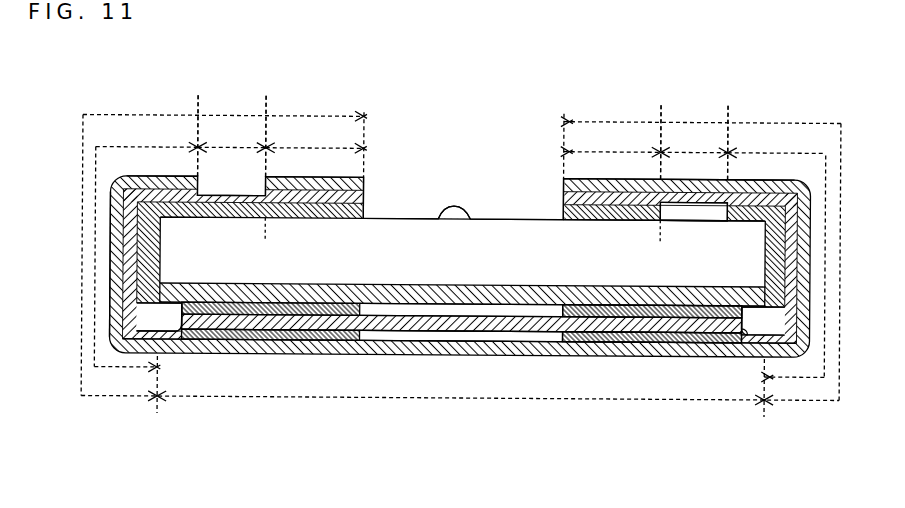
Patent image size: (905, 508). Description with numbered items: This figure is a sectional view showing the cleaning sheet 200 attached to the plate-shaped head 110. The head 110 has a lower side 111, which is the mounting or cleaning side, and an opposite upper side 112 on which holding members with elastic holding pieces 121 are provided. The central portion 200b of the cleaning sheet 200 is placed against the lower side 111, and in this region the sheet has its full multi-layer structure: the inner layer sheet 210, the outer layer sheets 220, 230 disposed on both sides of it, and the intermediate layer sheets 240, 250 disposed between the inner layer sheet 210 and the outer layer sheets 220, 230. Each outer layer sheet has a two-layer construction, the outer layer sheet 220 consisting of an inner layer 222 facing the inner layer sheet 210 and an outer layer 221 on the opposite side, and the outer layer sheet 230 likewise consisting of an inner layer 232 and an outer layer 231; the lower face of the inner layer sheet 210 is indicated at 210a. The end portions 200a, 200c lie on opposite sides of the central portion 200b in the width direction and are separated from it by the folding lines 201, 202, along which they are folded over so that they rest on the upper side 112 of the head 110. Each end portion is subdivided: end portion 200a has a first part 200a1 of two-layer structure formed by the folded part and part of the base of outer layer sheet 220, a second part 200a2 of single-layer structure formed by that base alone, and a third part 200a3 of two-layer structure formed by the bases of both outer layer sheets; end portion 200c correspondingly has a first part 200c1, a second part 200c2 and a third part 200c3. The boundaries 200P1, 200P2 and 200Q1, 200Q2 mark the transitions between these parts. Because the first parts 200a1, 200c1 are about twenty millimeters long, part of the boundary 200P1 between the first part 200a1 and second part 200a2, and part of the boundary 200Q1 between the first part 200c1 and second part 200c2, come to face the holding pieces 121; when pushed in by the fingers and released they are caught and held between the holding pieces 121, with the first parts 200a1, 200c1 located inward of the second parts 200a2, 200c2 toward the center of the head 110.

The cleaning sheet 200 is at (326, 96).
The end portion 200a is at (766, 114).
The first part 200a1 is at (593, 144).
The second part 200a2 is at (673, 144).
The third part 200a3 is at (763, 144).
The central portion 200b is at (446, 421).
The end portion 200c is at (124, 110).
The first part 200c1 is at (280, 143).
The second part 200c2 is at (212, 143).
The third part 200c3 is at (130, 143).
The boundary 200P1 is at (661, 134).
The right boundary position 2 200P2 is at (728, 135).
The boundary 200Q1 is at (266, 128).
The left boundary position 2 200Q2 is at (198, 127).
The head 110 is at (491, 203).
The lower side 111 is at (590, 287).
The upper side 112 is at (441, 219).
The elastic holding piece 121 is at (263, 233).
The folding line 201 is at (763, 330).
The folding line 202 is at (158, 325).
The inner layer sheet 210 is at (461, 316).
The lower surface of electrode body 210a is at (417, 331).
The outer layer sheet 220 is at (551, 197).
The outer layer 221 is at (493, 350).
The inner layer 222 is at (558, 353).
The outer layer sheet 230 is at (381, 194).
The outer layer 231 is at (307, 287).
The inner layer 232 is at (367, 286).
The intermediate layer sheet 240 is at (638, 341).
The intermediate layer sheet 250 is at (286, 342).